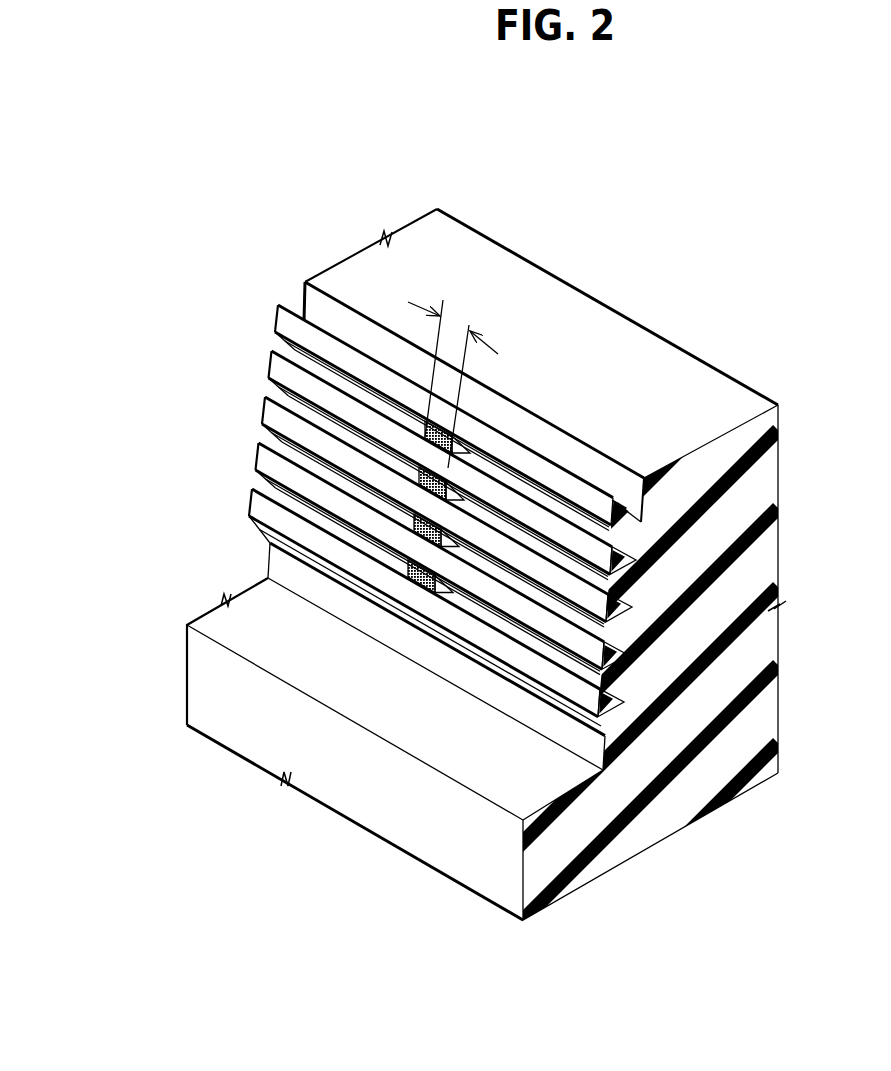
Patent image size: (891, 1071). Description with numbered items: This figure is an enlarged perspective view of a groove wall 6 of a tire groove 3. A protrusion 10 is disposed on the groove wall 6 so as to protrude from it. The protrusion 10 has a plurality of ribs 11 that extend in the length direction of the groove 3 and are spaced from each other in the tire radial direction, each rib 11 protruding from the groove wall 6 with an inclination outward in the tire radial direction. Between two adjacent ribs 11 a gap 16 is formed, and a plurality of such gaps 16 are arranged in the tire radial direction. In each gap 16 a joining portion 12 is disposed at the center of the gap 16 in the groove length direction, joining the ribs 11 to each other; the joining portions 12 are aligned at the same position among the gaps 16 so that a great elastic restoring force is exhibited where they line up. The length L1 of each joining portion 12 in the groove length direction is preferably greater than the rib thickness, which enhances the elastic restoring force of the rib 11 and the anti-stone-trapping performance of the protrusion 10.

The groove 3 is at (128, 270).
The groove wall 6 is at (343, 325).
The protrusion 10 is at (240, 392).
The rib 11 is at (381, 380).
The joining portion 12 is at (427, 428).
The gap 16 is at (618, 552).
The length of the joining portion L1 is at (458, 325).